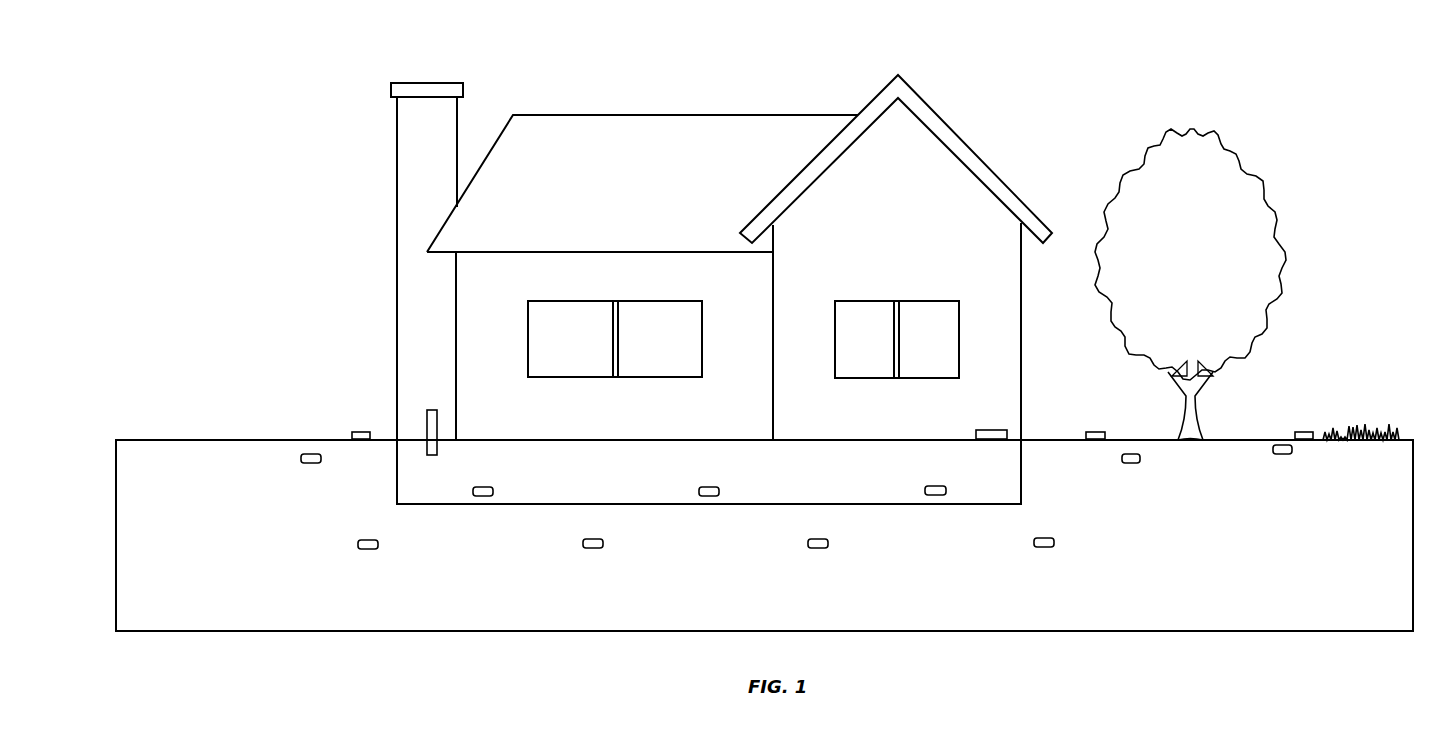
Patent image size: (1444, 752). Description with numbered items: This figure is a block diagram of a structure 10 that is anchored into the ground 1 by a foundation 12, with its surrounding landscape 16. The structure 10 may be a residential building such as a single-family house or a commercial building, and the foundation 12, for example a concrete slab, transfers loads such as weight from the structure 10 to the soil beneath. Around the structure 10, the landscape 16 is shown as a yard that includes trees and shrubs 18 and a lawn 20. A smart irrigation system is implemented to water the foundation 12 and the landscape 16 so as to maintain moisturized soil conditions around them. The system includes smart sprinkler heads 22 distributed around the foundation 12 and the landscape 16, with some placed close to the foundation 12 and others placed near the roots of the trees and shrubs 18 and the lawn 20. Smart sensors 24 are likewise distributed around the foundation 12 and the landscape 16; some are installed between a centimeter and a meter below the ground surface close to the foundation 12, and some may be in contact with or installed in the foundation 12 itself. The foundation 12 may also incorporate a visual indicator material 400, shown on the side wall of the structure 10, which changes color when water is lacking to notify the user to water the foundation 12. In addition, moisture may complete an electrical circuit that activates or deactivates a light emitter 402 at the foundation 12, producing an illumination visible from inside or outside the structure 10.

The ground / environment 1 is at (1413, 532).
The structure 10 is at (722, 115).
The foundation 12 is at (1022, 469).
The landscape 16 is at (1298, 74).
The trees and shrubs 18 is at (1223, 137).
The lawn 20 is at (1367, 425).
The smart sprinkler heads 22 is at (361, 431).
The smart sensors 24 is at (367, 549).
The visual indicator material 400 is at (432, 409).
The light emitter 402 is at (993, 429).